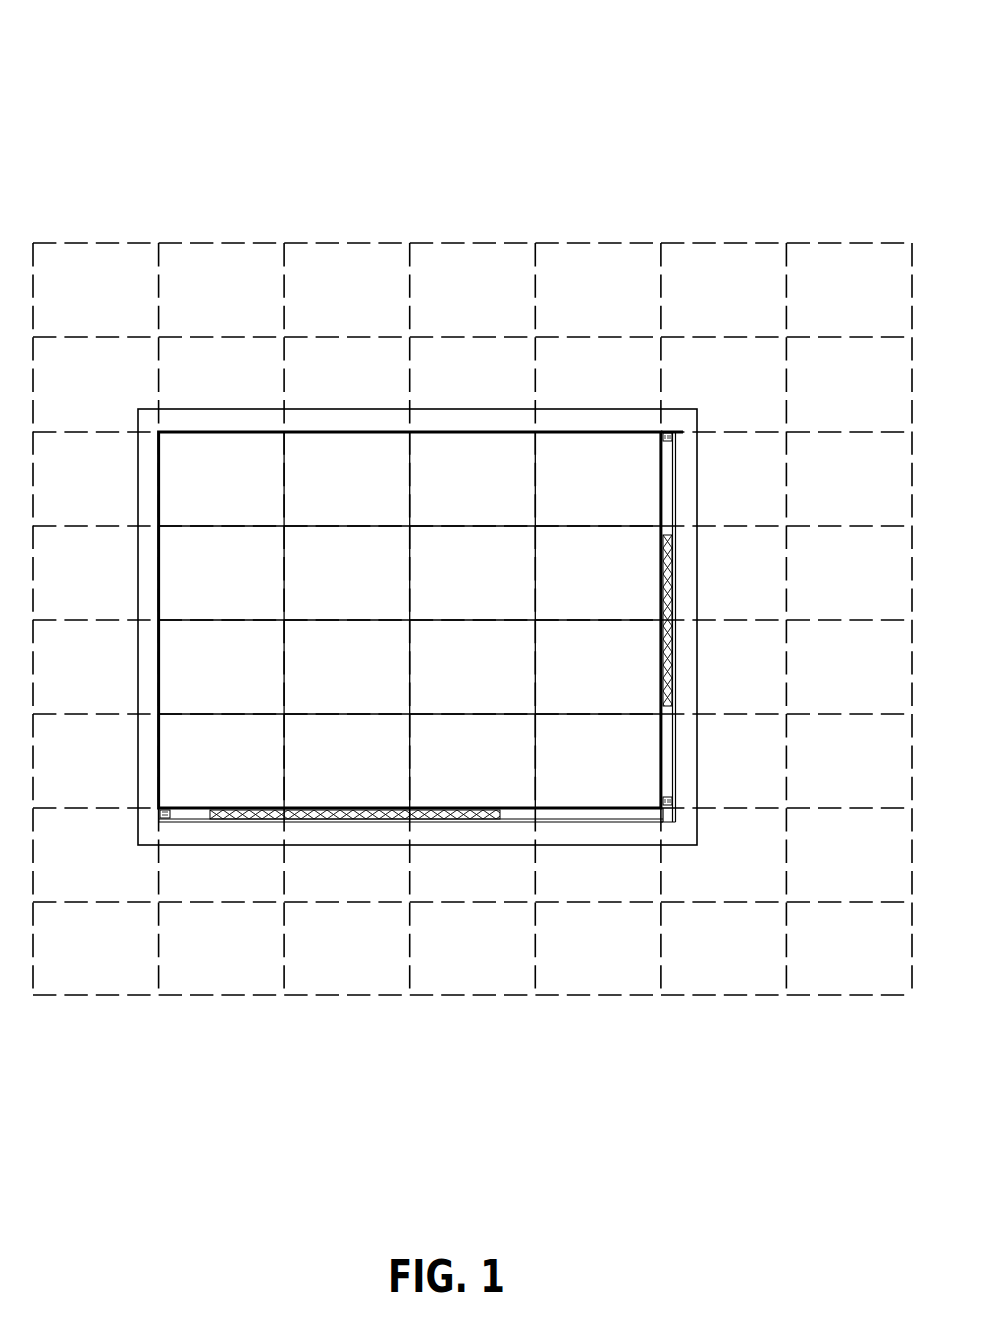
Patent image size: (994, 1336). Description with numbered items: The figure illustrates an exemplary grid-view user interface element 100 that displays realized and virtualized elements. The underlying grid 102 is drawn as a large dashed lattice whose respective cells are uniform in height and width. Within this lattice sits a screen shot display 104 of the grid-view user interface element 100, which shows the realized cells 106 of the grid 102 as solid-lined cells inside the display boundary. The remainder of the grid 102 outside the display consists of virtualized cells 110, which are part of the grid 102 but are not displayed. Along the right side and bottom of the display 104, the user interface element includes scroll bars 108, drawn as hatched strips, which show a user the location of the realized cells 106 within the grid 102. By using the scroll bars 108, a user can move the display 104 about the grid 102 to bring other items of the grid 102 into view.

The grid-view user interface element 100 is at (141, 59).
The grid 102 is at (472, 243).
The screen shot display 104 is at (417, 627).
The realized cells 106 is at (410, 572).
The scroll bars 108 is at (660, 572).
The virtualized cells 110 is at (670, 337).